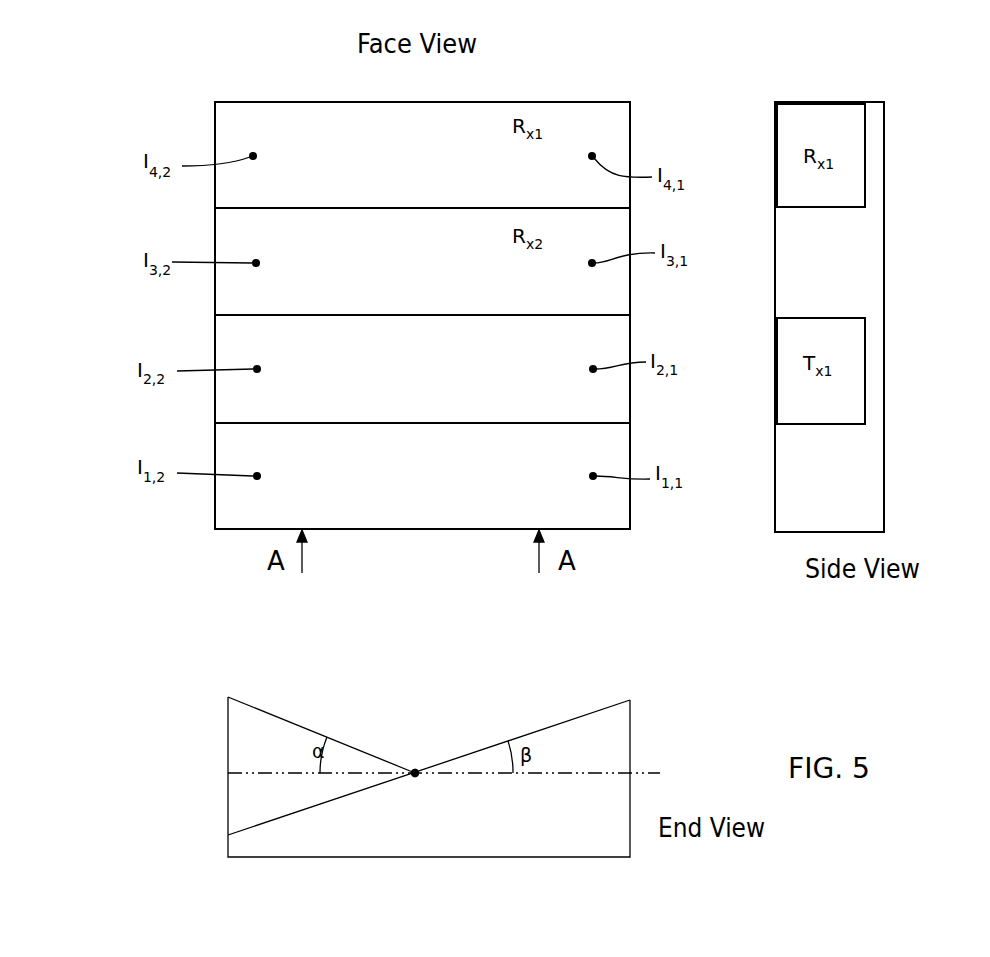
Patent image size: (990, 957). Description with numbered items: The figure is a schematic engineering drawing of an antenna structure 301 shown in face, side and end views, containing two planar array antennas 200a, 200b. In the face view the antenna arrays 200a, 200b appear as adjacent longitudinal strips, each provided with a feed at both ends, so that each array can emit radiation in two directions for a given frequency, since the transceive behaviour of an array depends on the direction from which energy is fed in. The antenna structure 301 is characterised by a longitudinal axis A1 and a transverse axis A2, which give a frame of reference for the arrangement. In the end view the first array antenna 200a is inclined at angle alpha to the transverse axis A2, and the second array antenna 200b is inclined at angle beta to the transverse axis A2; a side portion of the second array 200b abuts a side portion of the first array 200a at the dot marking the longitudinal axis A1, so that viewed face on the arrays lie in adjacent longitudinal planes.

The antenna structure 301 is at (133, 523).
The first planar array antenna 200a is at (422, 544).
The second planar array antenna 200b is at (422, 640).
The longitudinal axis A1 is at (416, 775).
The transverse axis A2 is at (469, 773).